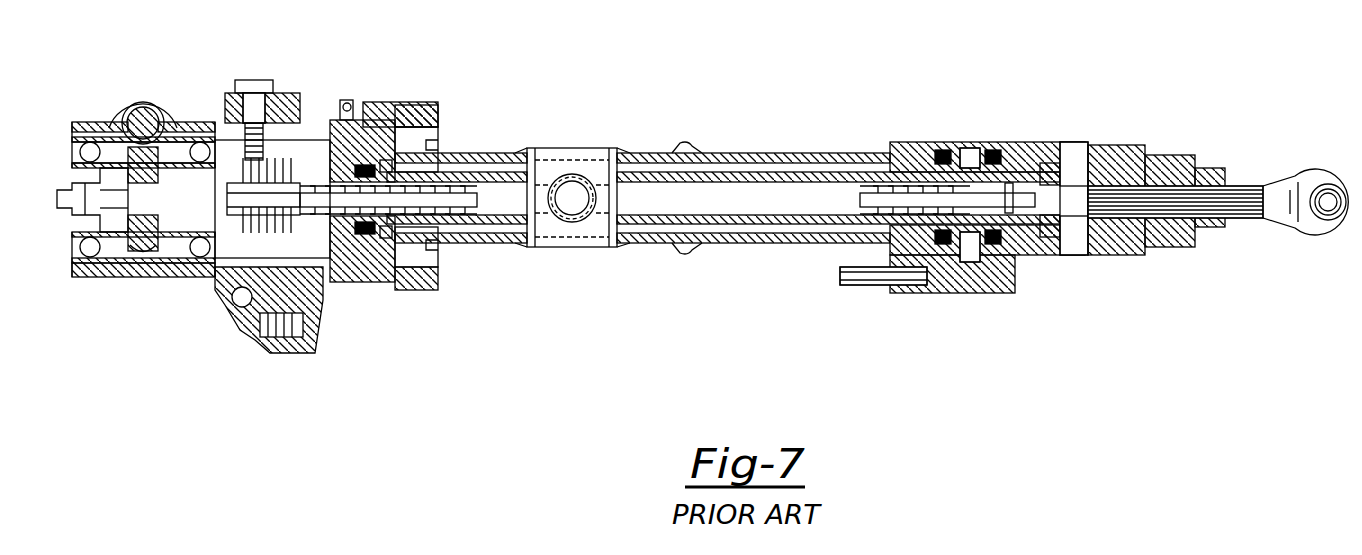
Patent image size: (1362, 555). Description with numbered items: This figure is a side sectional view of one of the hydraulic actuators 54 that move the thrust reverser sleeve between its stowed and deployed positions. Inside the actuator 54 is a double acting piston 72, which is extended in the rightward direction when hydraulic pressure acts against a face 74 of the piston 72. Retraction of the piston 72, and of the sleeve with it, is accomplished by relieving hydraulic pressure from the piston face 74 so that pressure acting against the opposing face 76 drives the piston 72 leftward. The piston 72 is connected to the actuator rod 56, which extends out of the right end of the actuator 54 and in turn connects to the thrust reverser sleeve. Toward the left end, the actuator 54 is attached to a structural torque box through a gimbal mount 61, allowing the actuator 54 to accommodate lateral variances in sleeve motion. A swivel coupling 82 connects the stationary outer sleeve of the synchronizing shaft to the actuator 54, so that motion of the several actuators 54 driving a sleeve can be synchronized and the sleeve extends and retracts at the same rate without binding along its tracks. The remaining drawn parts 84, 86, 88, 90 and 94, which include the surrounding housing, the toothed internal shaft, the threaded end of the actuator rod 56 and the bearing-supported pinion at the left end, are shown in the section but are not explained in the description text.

The rack and pinion steering gear 54 is at (690, 138).
The tie rod end 56 is at (1243, 193).
The mounting bushing 61 is at (585, 242).
The seal 72 is at (385, 227).
The housing 74 is at (320, 250).
The retaining nut 76 is at (395, 225).
The bushing 82 is at (1055, 192).
The rack housing tube 84 is at (385, 160).
The rack 86 is at (428, 187).
The inner tie rod 88 is at (1122, 203).
The pinion 90 is at (147, 112).
The pinion bearing 94 is at (186, 145).